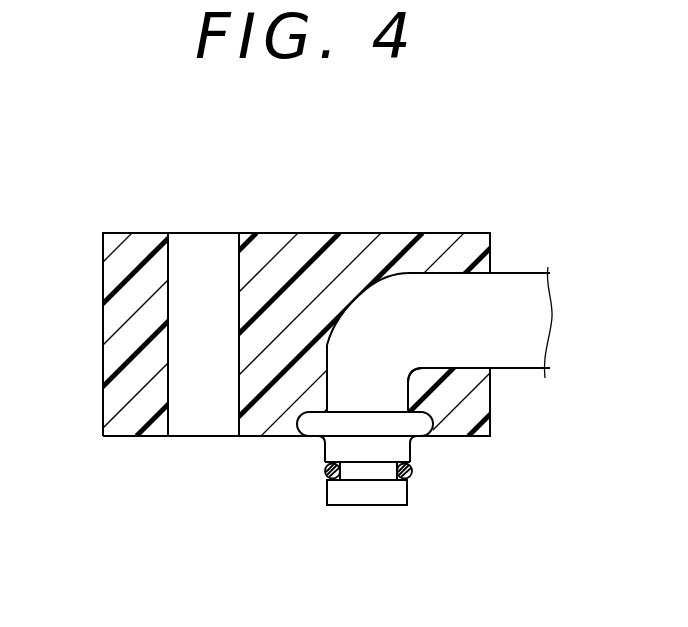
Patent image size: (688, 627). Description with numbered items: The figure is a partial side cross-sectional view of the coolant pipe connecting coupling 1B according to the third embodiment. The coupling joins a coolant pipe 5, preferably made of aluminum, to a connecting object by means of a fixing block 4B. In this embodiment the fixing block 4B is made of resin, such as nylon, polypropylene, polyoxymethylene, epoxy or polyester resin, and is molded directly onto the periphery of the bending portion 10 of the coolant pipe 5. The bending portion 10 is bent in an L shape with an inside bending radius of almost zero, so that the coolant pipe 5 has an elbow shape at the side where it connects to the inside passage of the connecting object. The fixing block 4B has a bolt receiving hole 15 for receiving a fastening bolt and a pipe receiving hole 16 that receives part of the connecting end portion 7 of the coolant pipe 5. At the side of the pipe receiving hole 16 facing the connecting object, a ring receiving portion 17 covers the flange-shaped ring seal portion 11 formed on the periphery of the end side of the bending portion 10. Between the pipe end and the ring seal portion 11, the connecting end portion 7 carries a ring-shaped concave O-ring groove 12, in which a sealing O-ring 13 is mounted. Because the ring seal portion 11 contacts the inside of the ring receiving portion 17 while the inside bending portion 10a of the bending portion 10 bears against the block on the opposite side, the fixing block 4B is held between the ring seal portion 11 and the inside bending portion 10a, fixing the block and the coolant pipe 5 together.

The coolant pipe connecting coupling 1B is at (135, 198).
The fixing block 4B is at (112, 358).
The bolt receiving hole 15 is at (168, 395).
The pipe receiving hole 16 is at (330, 352).
The bending portion 10 is at (390, 317).
The inside bending portion 10a is at (417, 360).
The coolant pipe 5 is at (517, 303).
The ring seal portion 11 is at (317, 424).
The ring receiving portion 17 is at (413, 443).
The O-ring 13 is at (325, 474).
The O-ring groove 12 is at (368, 470).
The connecting end portion 7 is at (402, 507).